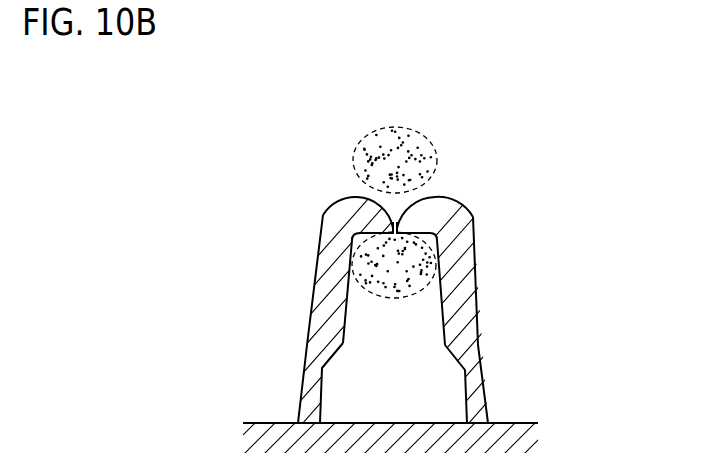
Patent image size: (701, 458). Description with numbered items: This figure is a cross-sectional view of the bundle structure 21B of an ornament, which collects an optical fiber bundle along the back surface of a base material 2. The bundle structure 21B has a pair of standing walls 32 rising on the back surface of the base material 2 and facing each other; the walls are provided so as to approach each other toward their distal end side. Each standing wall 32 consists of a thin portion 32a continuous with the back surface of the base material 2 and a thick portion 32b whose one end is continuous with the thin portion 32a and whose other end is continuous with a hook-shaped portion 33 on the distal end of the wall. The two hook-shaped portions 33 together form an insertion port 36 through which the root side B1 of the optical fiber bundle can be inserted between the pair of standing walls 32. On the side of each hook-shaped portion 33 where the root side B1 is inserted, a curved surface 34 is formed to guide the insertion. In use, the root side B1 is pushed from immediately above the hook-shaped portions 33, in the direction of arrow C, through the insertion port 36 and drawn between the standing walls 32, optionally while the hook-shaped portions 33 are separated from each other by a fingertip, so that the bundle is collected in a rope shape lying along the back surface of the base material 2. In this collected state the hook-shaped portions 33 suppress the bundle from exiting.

The base material 2 is at (523, 421).
The bundle structure 21B is at (426, 268).
The standing walls 32 is at (426, 315).
The thin portion 32a is at (312, 390).
The thick portion 32b is at (328, 313).
The hook-shaped portion 33 is at (330, 207).
The curved surface 34 is at (367, 198).
The insertion port 36 is at (395, 212).
The root side of the optical fiber bundle B1 is at (439, 138).
The direction of arrow c C is at (342, 158).